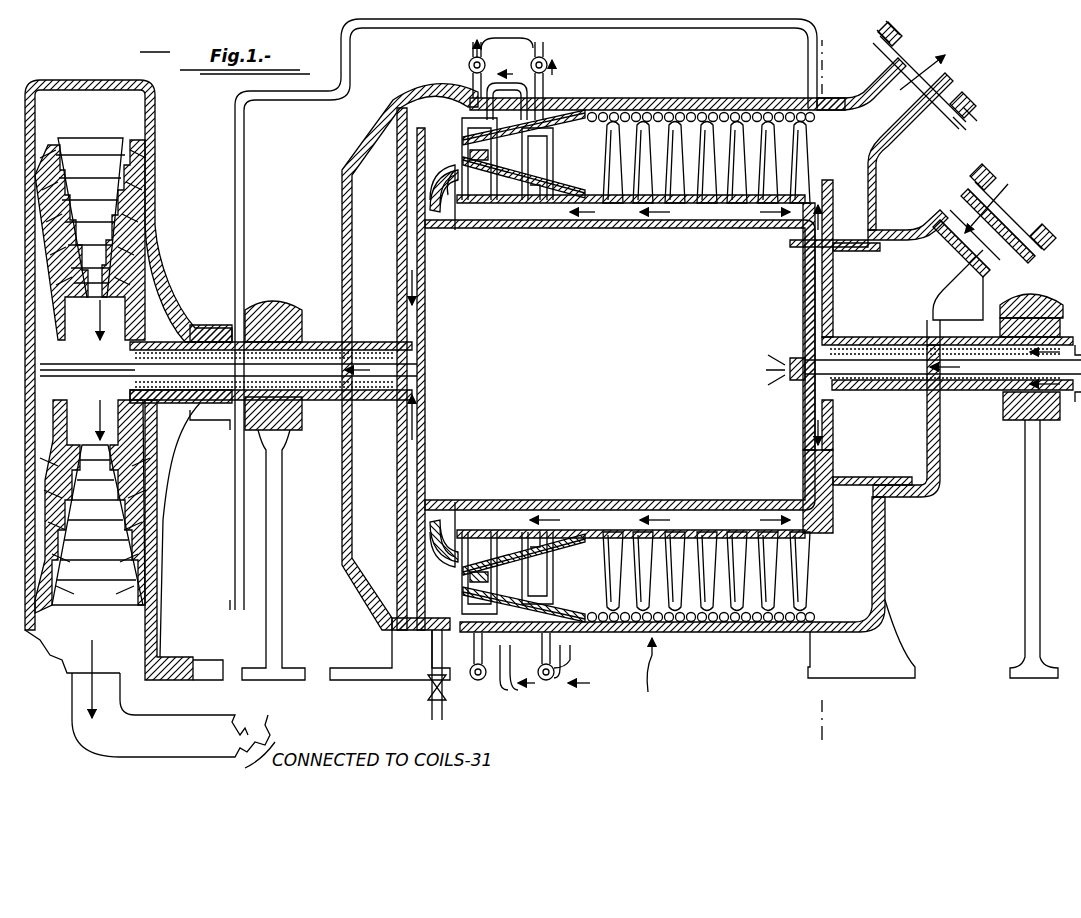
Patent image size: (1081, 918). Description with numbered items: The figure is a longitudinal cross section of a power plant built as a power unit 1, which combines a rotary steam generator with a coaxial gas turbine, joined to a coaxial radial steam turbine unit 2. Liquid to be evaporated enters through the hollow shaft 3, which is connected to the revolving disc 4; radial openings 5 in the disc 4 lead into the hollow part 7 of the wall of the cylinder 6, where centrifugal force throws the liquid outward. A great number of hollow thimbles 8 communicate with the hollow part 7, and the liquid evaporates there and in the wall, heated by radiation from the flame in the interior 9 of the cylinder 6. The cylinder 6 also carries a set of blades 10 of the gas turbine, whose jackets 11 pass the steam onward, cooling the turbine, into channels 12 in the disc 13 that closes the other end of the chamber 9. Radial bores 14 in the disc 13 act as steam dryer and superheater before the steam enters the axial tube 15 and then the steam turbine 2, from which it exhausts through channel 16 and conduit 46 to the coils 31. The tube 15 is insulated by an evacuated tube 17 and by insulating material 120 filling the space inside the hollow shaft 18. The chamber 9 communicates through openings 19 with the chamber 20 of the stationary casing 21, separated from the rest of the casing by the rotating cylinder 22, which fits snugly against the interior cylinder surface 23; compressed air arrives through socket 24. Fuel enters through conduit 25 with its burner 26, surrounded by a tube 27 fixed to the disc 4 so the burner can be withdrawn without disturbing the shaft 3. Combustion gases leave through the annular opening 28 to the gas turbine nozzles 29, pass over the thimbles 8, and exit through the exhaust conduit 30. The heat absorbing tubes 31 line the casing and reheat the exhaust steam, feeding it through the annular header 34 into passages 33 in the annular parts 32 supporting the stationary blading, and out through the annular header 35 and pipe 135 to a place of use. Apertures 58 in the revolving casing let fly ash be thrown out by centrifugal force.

The power unit 1 is at (655, 666).
The steam turbine unit 2 is at (128, 364).
The hollow shaft 3 is at (1000, 398).
The revolving disc 4 is at (805, 270).
The radial openings 5 is at (830, 282).
The cylinder 6 is at (668, 228).
The hollow part of cylinder wall 7 is at (597, 228).
The hollow thimbles 8 is at (800, 140).
The interior of cylinder 9 is at (528, 365).
The blades 10 is at (566, 137).
The jackets 11 is at (535, 200).
The channels 12 is at (450, 210).
The disc 13 is at (426, 392).
The radial bores 14 is at (412, 327).
The tube 15 is at (302, 340).
The channel 16 is at (110, 625).
The evacuated tube 17 is at (232, 405).
The hollow shaft 18 is at (287, 432).
The openings 19 is at (820, 440).
The chamber 20 is at (919, 284).
The stationary casing 21 is at (655, 100).
The cylinder 22 is at (900, 500).
The interior cylinder surface 23 is at (885, 228).
The socket 24 is at (995, 240).
The fuel conduit 25 is at (868, 358).
The burner 26 is at (788, 378).
The tube 27 is at (1031, 296).
The annular opening 28 is at (432, 195).
The gas turbine nozzles 29 is at (455, 160).
The exhaust conduit 30 is at (920, 86).
The heat absorbing tubes 31 is at (758, 100).
The annular parts 32 is at (480, 200).
The passages 33 is at (500, 80).
The annular header 34 is at (546, 62).
The annular header 35 is at (470, 62).
The conduit 46 is at (745, 20).
The apertures 58 is at (440, 130).
The insulating material 120 is at (215, 330).
The pipe 135 is at (516, 40).